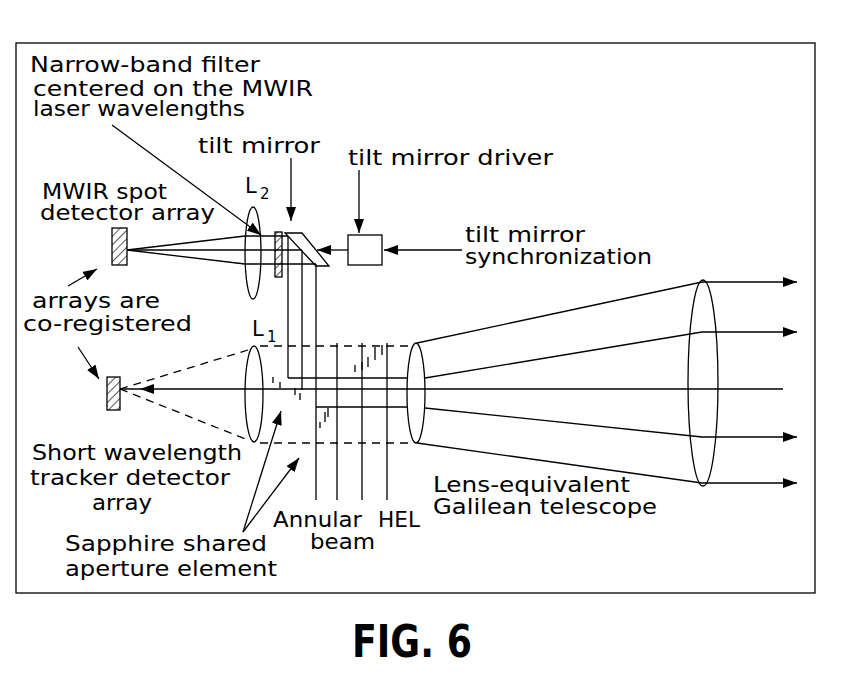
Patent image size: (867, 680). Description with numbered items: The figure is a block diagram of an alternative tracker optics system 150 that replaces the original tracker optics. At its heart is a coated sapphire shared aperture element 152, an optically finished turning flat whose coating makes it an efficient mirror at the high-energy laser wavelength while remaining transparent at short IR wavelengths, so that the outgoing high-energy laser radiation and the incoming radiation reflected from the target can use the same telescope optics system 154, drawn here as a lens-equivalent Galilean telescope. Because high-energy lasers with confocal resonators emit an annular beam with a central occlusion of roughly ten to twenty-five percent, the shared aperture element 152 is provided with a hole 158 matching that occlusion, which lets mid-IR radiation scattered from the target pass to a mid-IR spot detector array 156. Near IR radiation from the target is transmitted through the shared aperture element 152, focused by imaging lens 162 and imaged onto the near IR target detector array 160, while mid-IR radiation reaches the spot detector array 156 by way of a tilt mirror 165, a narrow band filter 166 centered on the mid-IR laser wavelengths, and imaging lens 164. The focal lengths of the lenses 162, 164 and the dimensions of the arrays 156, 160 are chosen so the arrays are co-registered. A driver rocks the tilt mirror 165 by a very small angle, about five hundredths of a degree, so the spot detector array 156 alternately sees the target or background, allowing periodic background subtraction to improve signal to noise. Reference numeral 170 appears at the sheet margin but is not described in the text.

The tracker optics system 150 is at (579, 40).
The sapphire shared aperture element 152 is at (376, 319).
The telescope optics system 154 is at (652, 284).
The mid-IR range detector array 156 is at (119, 173).
The hole 158 is at (335, 380).
The near IR detector array 160 is at (100, 403).
The imaging lens 162 is at (249, 355).
The imaging lens 164 is at (250, 206).
The tilt mirror 165 is at (297, 236).
The filter 166 is at (277, 280).
The optical path 170 is at (725, 679).